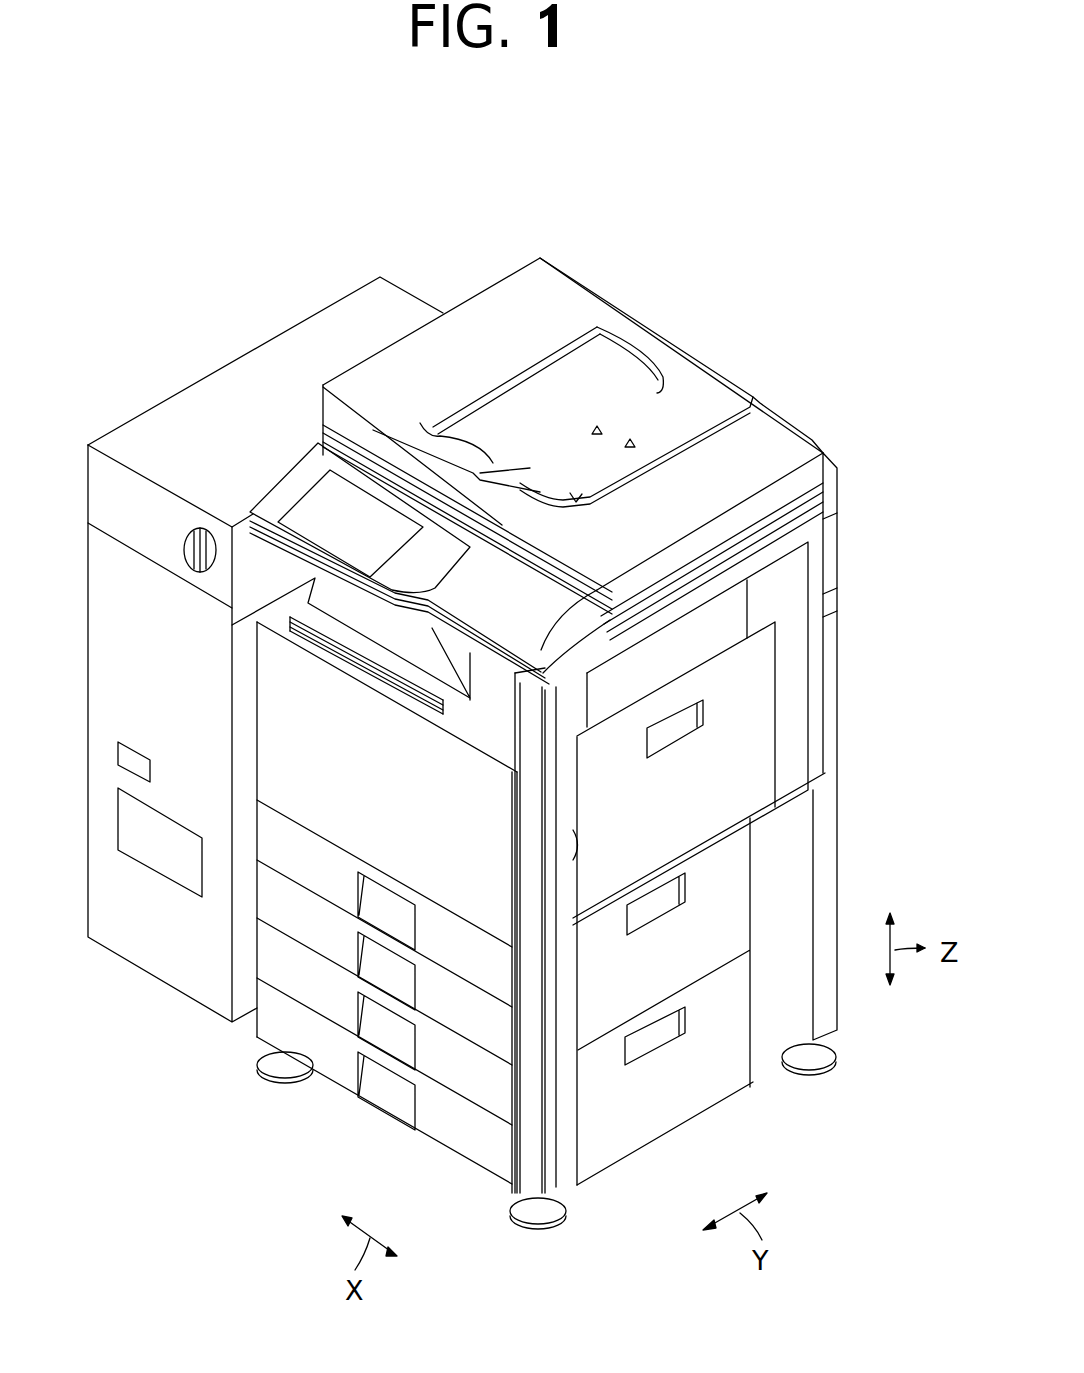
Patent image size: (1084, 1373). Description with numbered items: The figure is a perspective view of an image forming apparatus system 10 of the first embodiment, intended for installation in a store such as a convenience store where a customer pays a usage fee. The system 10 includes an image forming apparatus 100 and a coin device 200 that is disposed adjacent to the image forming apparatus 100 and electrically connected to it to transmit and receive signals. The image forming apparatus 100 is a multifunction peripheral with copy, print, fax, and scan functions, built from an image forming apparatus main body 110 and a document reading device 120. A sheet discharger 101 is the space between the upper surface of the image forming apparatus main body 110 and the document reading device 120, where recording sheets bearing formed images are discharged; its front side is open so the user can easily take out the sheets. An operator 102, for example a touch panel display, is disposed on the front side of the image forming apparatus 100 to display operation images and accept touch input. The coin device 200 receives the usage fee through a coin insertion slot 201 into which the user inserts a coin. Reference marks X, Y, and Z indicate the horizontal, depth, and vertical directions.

The image forming apparatus system 10 is at (807, 171).
The image forming apparatus 100 is at (736, 339).
The sheet discharger 101 is at (408, 645).
The operator 102 is at (356, 508).
The image forming apparatus main body 110 is at (840, 549).
The document reading device 120 is at (649, 317).
The coin device 200 is at (287, 327).
The coin insertion slot 201 is at (187, 540).